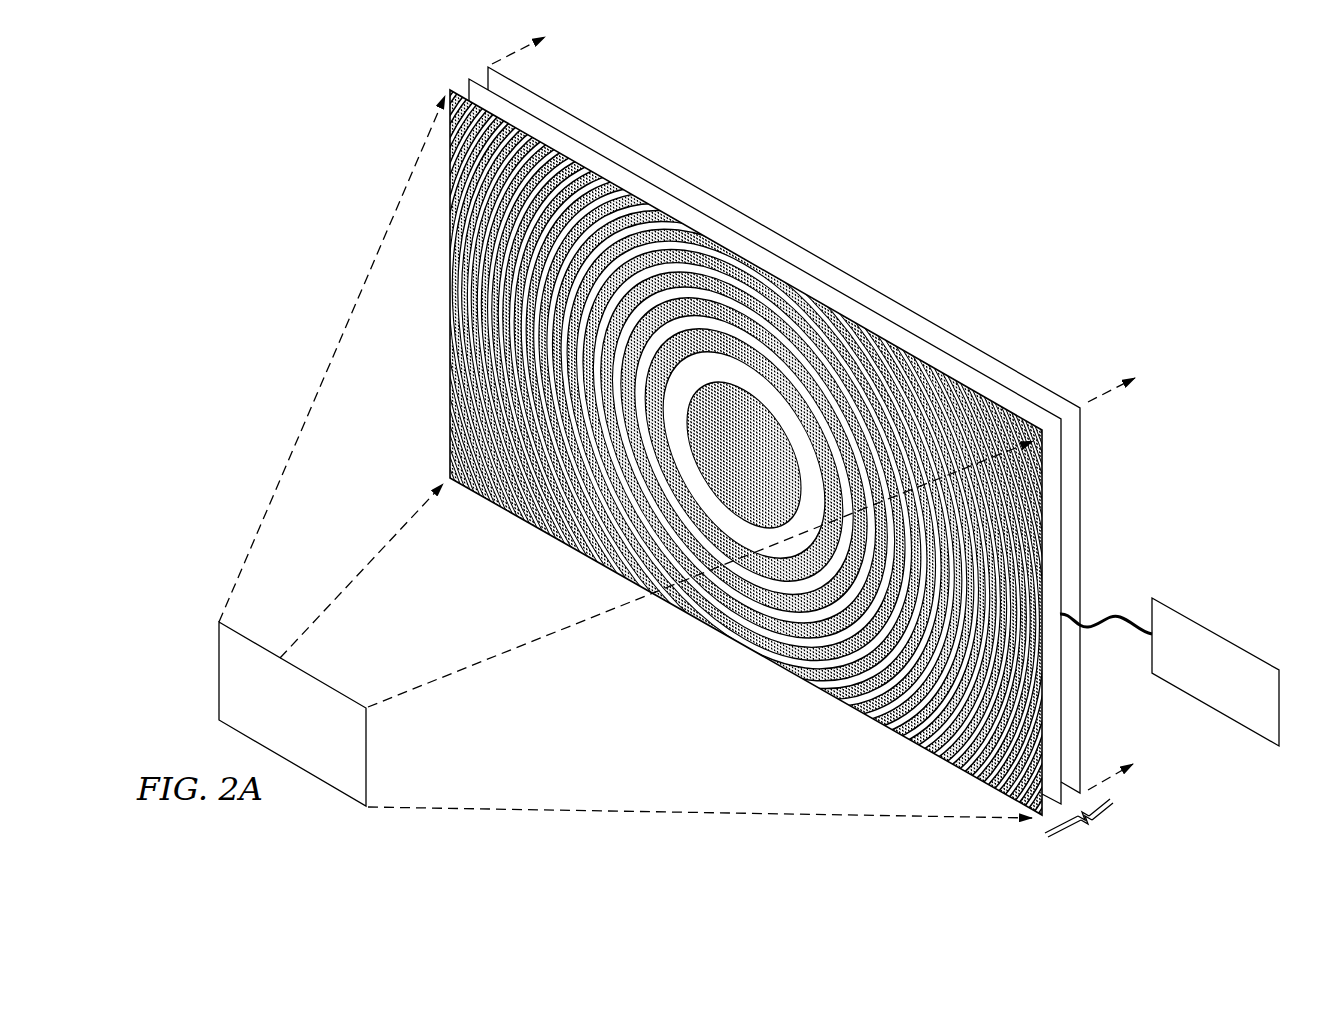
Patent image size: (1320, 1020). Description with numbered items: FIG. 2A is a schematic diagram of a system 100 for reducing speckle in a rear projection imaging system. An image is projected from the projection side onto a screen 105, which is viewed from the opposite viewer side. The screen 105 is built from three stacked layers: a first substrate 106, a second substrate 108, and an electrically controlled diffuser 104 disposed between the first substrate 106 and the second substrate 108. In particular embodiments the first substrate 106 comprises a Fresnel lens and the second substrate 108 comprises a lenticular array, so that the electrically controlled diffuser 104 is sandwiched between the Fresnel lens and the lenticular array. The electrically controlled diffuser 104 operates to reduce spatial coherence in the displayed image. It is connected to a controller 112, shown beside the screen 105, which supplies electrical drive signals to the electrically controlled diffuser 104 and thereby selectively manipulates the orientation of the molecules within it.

The system 100 is at (1059, 193).
The electrically controlled diffuser 104 is at (978, 370).
The screen 105 is at (1086, 822).
The first substrate 106 is at (1021, 422).
The second substrate 108 is at (933, 323).
The controller 112 is at (1232, 645).